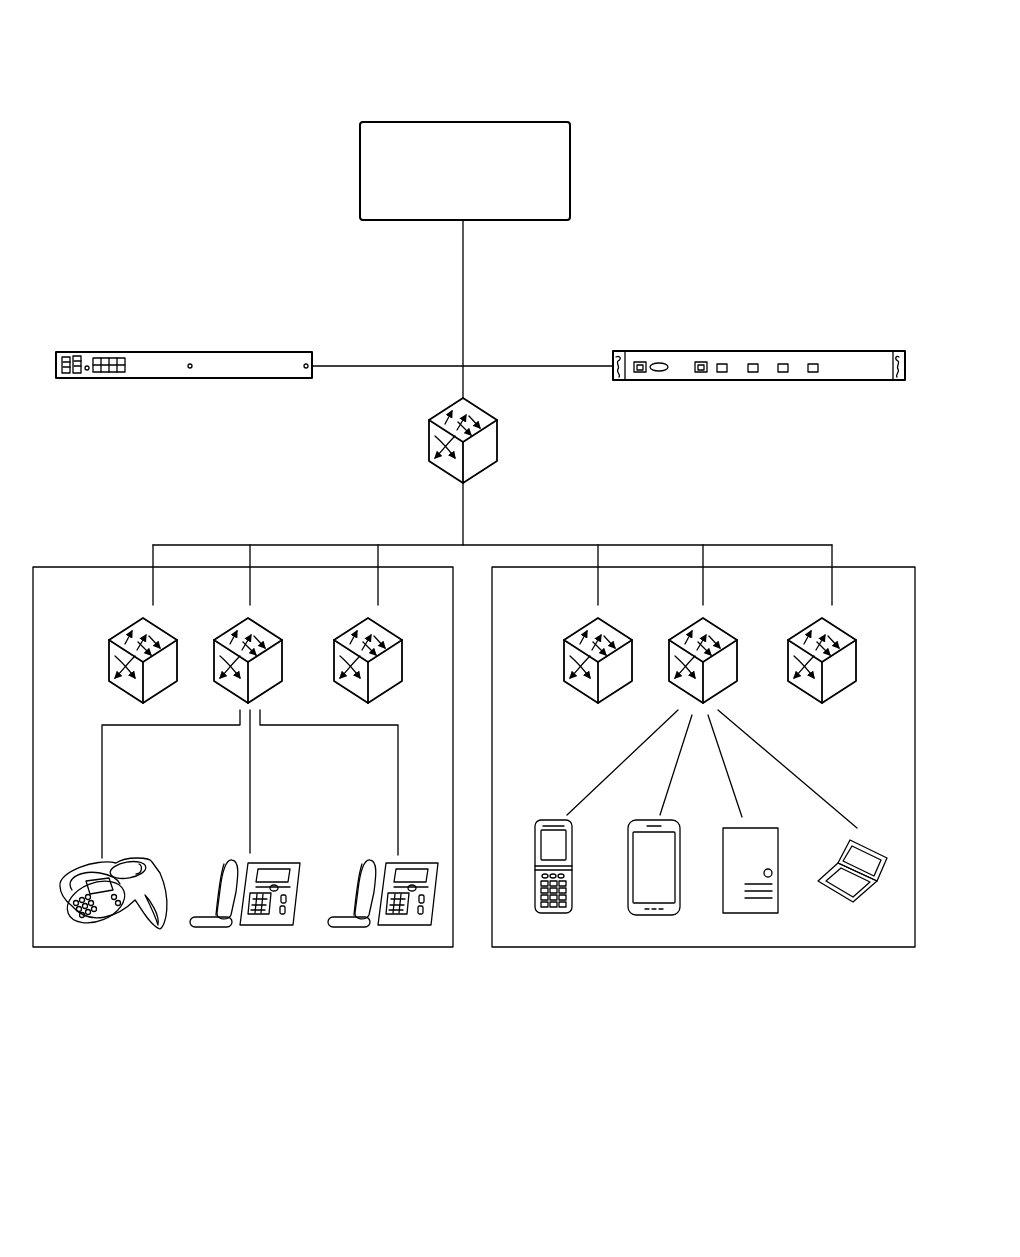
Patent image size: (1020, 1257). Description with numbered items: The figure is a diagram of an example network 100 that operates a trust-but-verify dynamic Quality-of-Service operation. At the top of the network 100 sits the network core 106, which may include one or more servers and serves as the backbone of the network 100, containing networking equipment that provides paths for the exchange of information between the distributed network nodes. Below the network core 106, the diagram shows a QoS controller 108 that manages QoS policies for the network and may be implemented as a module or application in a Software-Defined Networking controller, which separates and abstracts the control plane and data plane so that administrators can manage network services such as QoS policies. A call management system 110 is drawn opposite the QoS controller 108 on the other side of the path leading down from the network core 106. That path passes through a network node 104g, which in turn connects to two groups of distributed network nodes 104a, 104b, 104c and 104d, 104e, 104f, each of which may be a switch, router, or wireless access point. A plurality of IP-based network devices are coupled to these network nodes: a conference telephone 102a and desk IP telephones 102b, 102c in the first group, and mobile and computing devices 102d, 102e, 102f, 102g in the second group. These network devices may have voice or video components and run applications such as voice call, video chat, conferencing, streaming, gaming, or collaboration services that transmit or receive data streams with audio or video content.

The network 100 is at (357, 50).
The network device 102a is at (88, 930).
The network device 102b is at (212, 928).
The network device 102c is at (350, 928).
The network device 102d is at (545, 913).
The network device 102e is at (652, 915).
The network device 102f is at (750, 913).
The network device 102g is at (852, 902).
The network node 104a is at (167, 628).
The network node 104b is at (272, 628).
The network node 104c is at (392, 626).
The network node 104d is at (622, 628).
The network node 104e is at (727, 628).
The network node 104f is at (846, 628).
The network node 104g is at (502, 431).
The network core 106 is at (570, 145).
The QoS controller 108 is at (283, 352).
The call management system 110 is at (830, 351).